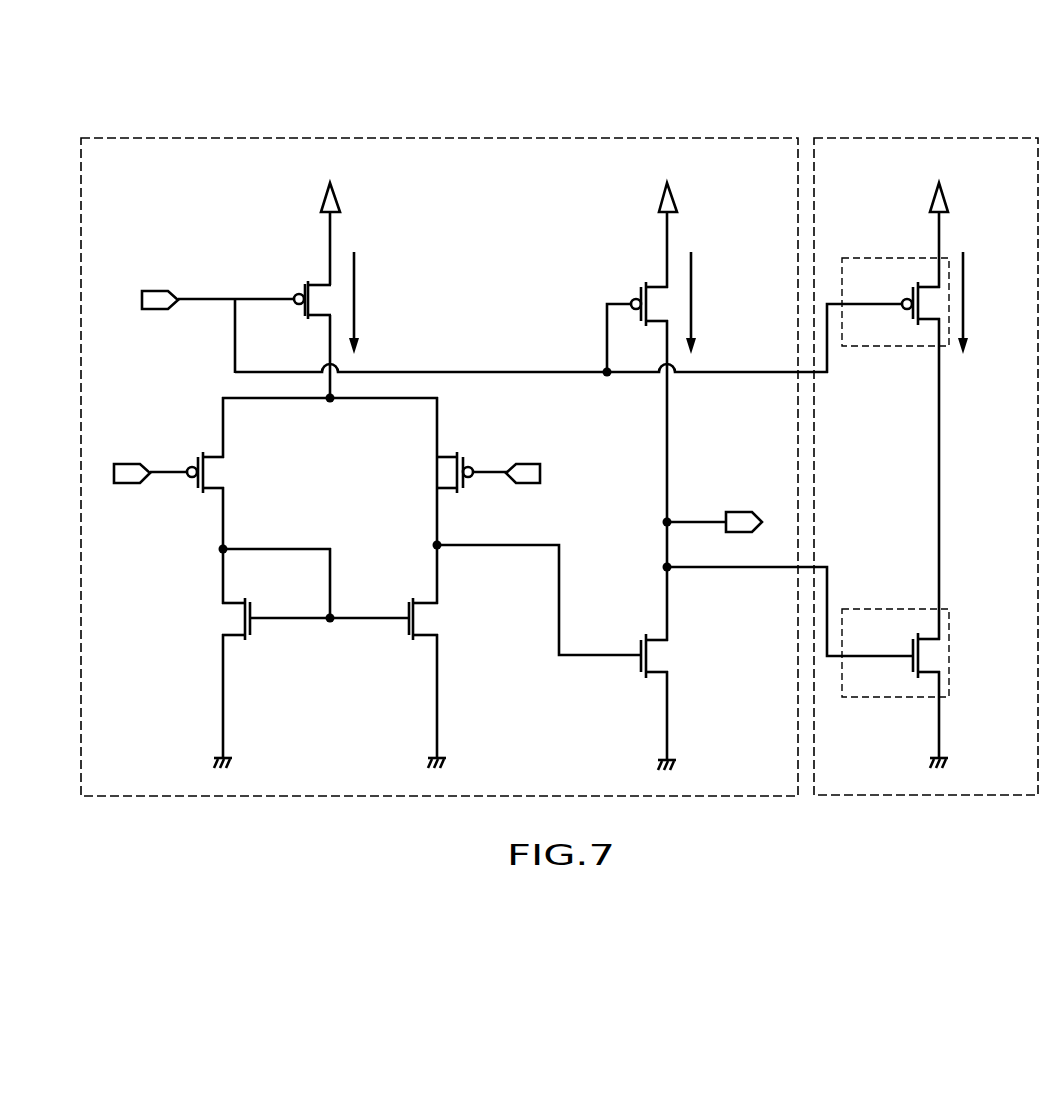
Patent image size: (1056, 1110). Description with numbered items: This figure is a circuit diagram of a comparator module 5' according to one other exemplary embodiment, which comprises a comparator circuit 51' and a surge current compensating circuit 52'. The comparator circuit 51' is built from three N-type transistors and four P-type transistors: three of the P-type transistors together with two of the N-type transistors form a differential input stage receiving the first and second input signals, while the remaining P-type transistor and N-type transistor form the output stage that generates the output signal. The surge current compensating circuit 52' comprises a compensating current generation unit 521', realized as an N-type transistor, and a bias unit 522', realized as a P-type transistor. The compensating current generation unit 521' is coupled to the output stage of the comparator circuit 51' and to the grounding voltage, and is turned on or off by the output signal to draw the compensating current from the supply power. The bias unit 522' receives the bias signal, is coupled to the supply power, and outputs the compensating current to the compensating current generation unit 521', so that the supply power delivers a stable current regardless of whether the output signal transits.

The comparator module 5' is at (559, 430).
The comparator circuit 51' is at (497, 434).
The surge current compensating circuit 52' is at (926, 433).
The compensating current generation unit 521' is at (895, 619).
The bias unit 522' is at (895, 268).